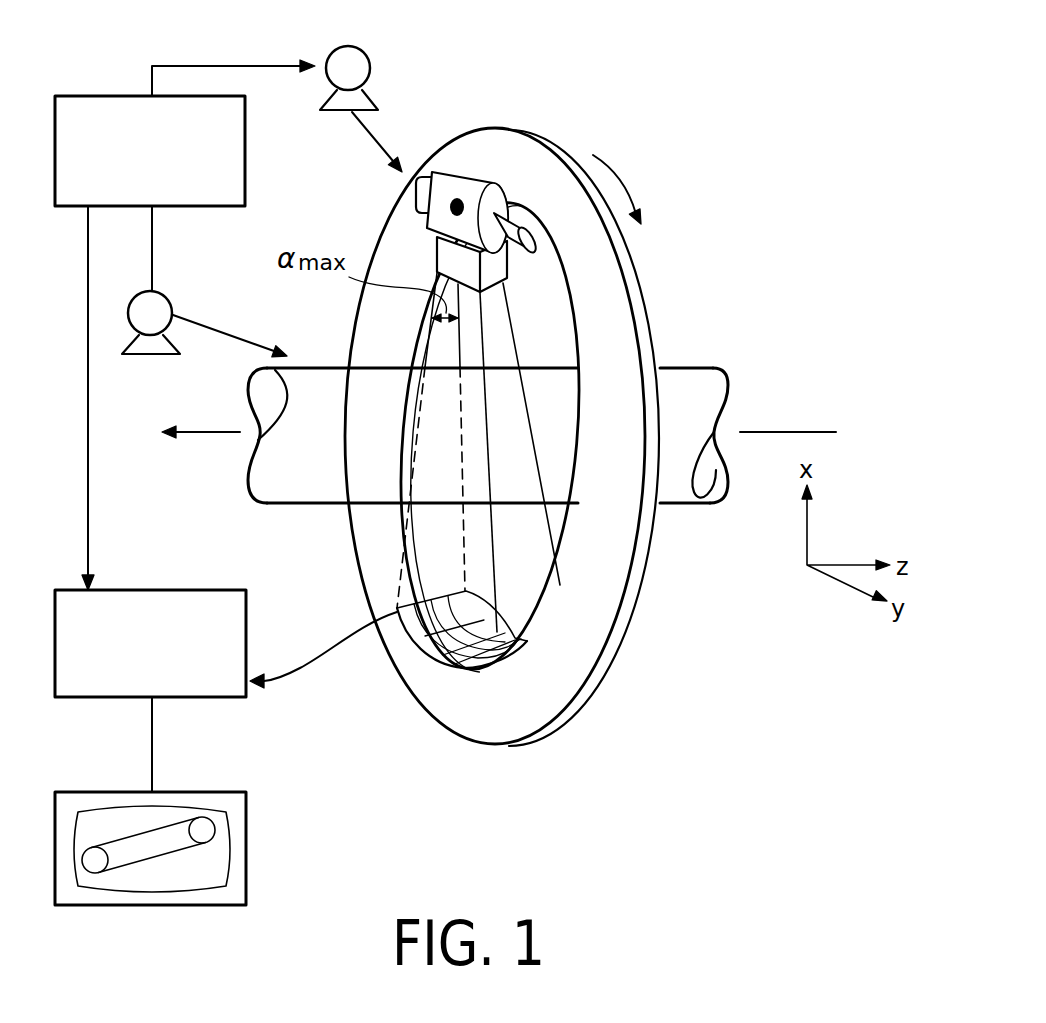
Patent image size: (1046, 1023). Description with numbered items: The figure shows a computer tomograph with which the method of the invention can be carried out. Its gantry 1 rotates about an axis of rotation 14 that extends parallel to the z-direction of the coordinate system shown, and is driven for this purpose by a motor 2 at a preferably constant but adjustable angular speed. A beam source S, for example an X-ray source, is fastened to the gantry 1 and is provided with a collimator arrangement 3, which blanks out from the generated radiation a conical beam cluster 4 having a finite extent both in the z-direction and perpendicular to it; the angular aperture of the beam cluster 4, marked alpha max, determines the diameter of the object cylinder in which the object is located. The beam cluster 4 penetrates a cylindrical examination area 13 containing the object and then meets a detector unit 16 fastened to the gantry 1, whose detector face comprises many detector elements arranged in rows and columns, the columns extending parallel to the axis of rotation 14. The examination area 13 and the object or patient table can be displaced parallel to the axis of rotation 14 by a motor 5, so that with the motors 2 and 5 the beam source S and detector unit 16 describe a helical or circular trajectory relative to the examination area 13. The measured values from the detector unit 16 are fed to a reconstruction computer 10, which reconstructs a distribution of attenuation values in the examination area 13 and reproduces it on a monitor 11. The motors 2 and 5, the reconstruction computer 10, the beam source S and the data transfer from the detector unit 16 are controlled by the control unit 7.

The gantry 1 is at (640, 598).
The motor 2 is at (372, 62).
The collimator arrangement 3 is at (497, 267).
The conical beam cluster 4 is at (493, 556).
The motor 5 is at (173, 307).
The control unit 7 is at (80, 96).
The reconstruction computer 10 is at (205, 590).
The monitor 11 is at (205, 792).
The cylindrical examination area 13 is at (312, 368).
The axis of rotation 14 is at (200, 430).
The detector unit 16 is at (428, 658).
The beam source S is at (480, 183).